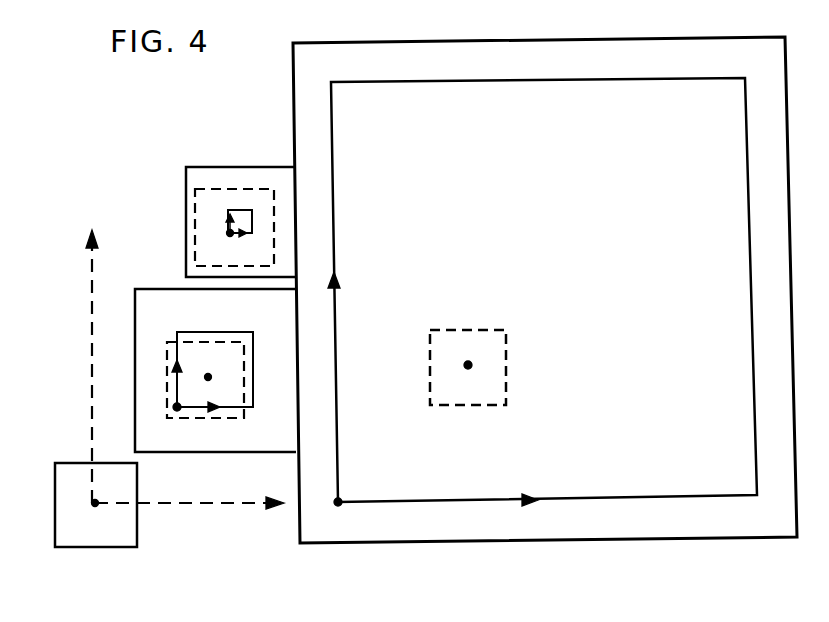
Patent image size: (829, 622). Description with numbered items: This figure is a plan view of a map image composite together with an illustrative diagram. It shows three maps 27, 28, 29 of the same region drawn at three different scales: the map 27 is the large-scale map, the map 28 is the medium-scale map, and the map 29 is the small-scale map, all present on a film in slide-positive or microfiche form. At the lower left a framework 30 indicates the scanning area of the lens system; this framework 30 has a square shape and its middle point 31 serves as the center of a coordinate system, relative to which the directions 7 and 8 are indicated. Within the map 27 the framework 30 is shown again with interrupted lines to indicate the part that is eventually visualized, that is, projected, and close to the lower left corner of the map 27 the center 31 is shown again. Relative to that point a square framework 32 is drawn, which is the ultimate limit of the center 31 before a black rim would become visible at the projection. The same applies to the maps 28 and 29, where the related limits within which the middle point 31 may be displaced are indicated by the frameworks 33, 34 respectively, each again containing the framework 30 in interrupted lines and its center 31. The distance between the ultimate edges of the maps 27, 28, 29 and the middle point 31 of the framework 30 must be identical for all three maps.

The map 27 is at (617, 60).
The square framework 32 is at (640, 495).
The map 29 is at (186, 188).
The framework 34 is at (236, 210).
The map 28 is at (148, 318).
The framework 33 is at (253, 380).
The direction 7 is at (90, 333).
The direction 8 is at (193, 505).
The framework 30 is at (508, 388).
The middle point 31 is at (340, 500).